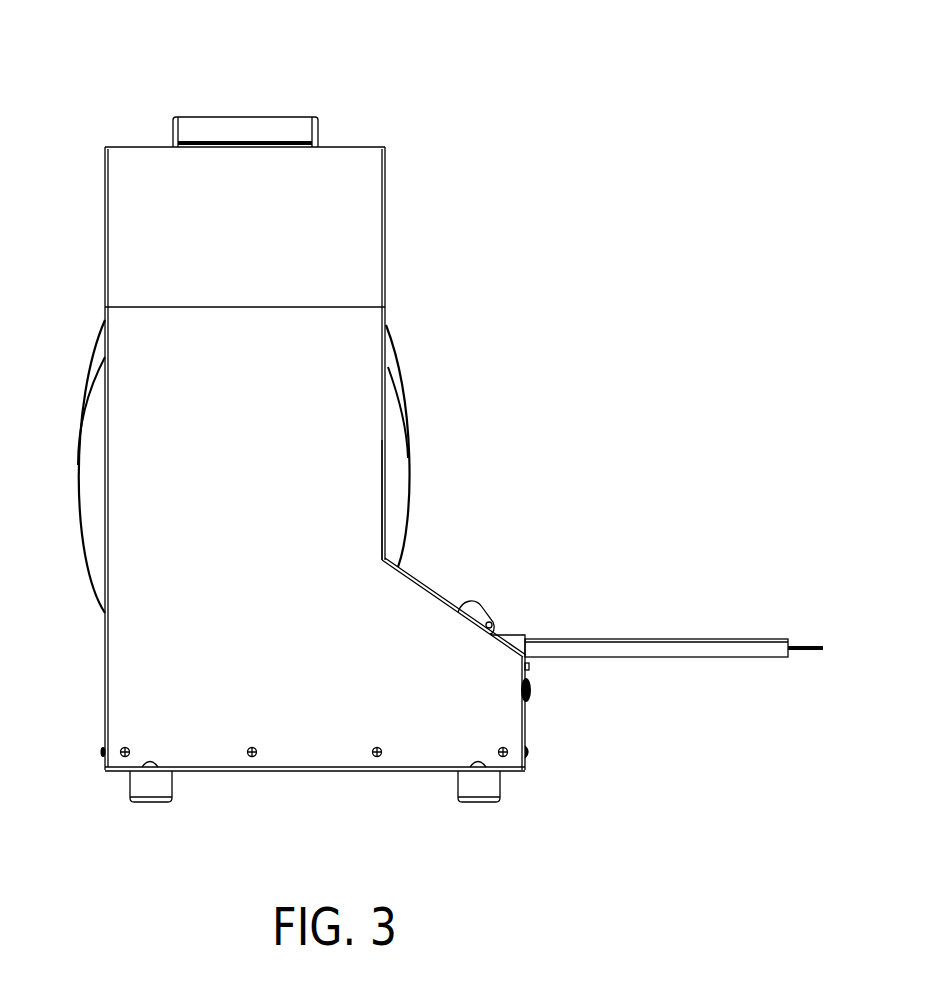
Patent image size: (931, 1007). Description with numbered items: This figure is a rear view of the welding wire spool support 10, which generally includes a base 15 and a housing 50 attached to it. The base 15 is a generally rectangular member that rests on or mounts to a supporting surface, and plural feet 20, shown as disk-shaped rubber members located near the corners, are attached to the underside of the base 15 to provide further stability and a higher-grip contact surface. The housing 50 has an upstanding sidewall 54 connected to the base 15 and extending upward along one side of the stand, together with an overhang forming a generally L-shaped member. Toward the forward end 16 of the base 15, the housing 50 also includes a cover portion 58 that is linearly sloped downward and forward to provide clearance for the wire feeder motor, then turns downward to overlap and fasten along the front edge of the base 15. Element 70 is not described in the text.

The welding wire spool support 10 is at (416, 141).
The base 15 is at (372, 776).
The forward end 16 is at (517, 713).
The feet 20 is at (130, 803).
The housing 50 is at (210, 705).
The sidewall 54 is at (350, 503).
The cover portion 58 is at (432, 585).
The lid 70 is at (242, 108).